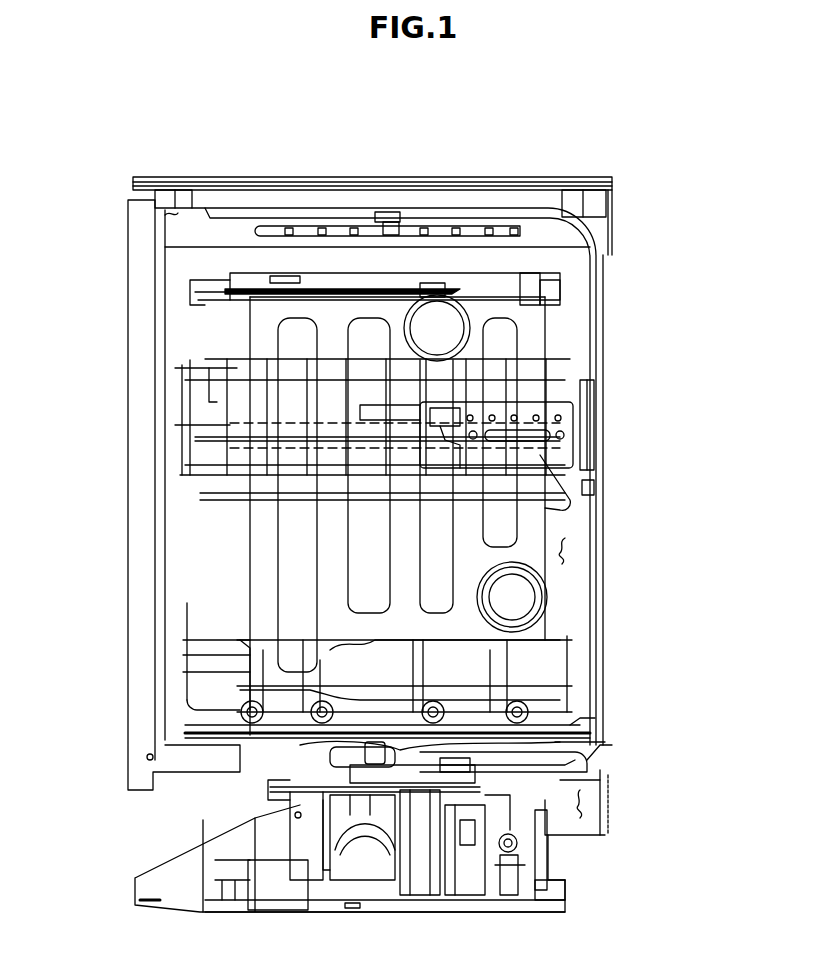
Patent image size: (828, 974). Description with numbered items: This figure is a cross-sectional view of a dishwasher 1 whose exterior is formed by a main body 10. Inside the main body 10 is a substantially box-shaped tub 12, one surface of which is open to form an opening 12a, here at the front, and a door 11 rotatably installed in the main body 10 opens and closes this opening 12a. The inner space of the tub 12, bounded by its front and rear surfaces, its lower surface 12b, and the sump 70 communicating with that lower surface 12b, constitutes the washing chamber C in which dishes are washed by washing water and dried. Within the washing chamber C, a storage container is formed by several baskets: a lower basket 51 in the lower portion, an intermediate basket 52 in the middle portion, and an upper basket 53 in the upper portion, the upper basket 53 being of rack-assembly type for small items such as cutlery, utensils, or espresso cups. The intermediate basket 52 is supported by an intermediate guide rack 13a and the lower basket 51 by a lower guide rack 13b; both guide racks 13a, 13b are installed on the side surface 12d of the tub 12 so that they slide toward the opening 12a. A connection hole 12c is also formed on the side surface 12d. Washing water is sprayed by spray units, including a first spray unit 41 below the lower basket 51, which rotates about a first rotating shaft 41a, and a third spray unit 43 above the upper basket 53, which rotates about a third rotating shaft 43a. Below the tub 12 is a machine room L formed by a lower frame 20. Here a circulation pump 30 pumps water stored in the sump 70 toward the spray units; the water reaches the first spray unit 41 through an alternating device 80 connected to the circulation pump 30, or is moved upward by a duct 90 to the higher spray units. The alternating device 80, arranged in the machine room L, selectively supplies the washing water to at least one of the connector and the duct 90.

The dishwasher 1 is at (418, 108).
The main body 10 is at (612, 198).
The door 11 is at (128, 330).
The tub 12 is at (598, 243).
The opening 12a is at (165, 220).
The lower surface 12b is at (568, 765).
The tub rear wall opening 12c is at (515, 605).
The side surface 12d is at (580, 510).
The intermediate guide rack 13a is at (568, 414).
The lower guide rack 13b is at (575, 722).
The lower frame 20 is at (550, 880).
The circulation pump 30 is at (430, 880).
The first spray unit 41 is at (600, 740).
The first rotating shaft 41a is at (300, 808).
The third spray unit 43 is at (302, 228).
The third rotating shaft 43a is at (388, 212).
The lower basket 51 is at (568, 658).
The intermediate basket 52 is at (570, 360).
The upper basket 53 is at (560, 288).
The sump 70 is at (300, 825).
The alternating device 80 is at (462, 880).
The duct 90 is at (540, 762).
The washing chamber C is at (568, 548).
The machine room L is at (590, 800).